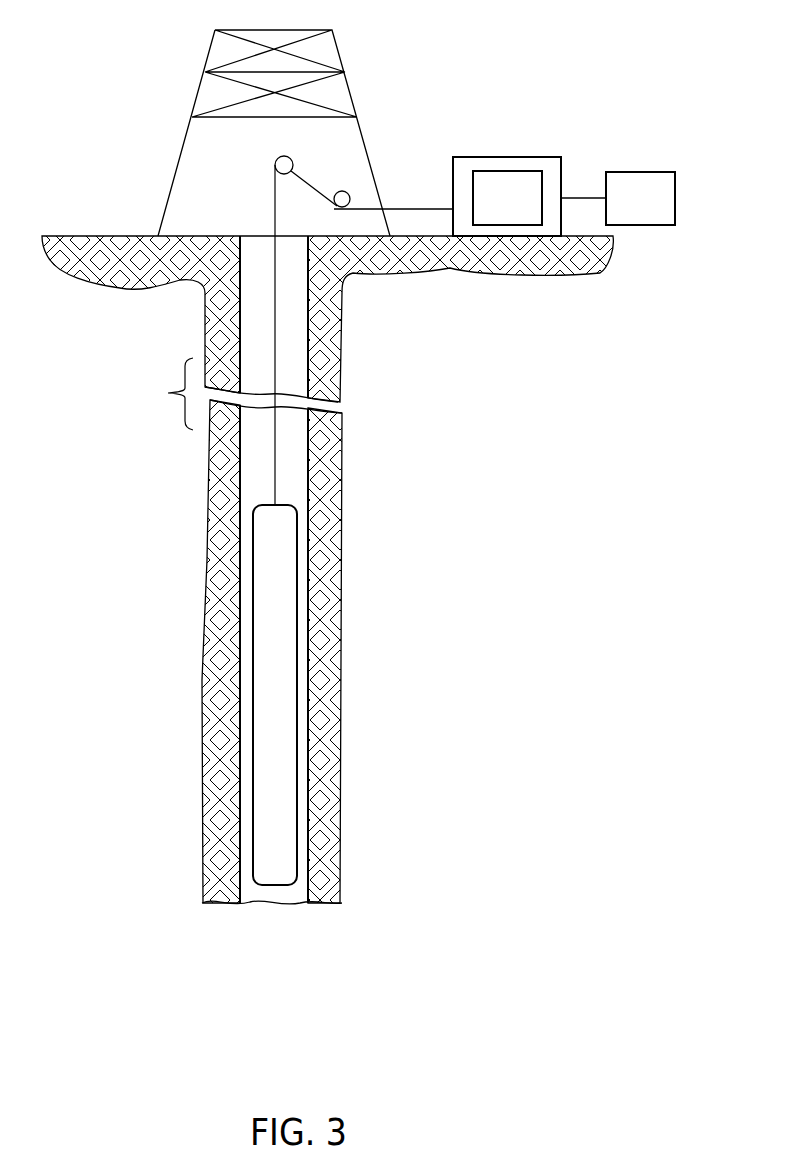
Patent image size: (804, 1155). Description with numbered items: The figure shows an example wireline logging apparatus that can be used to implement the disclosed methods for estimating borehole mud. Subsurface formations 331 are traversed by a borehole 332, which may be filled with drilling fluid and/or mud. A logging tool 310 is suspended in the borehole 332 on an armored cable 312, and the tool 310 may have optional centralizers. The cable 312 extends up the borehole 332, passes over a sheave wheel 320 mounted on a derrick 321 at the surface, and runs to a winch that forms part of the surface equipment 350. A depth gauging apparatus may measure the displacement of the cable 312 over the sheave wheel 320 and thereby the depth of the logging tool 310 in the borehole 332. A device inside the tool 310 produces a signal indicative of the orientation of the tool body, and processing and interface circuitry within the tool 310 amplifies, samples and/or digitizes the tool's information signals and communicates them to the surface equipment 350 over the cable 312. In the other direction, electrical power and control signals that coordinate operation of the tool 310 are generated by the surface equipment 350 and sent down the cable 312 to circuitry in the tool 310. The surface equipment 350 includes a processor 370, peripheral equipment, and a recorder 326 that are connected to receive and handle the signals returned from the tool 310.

The logging tool 310 is at (278, 830).
The armored cable 312 is at (275, 350).
The sheave wheel 320 is at (279, 161).
The derrick 321 is at (338, 47).
The recorder 326 is at (648, 170).
The subsurface formations 331 is at (218, 792).
The borehole 332 is at (253, 487).
The surface equipment 350 is at (450, 172).
The processor 370 is at (504, 182).